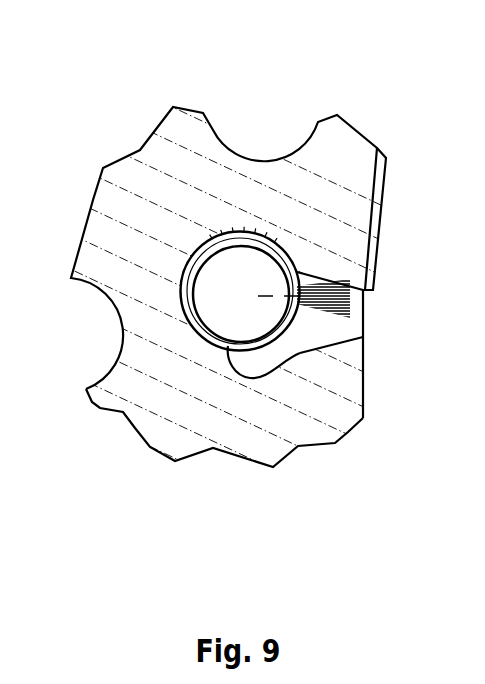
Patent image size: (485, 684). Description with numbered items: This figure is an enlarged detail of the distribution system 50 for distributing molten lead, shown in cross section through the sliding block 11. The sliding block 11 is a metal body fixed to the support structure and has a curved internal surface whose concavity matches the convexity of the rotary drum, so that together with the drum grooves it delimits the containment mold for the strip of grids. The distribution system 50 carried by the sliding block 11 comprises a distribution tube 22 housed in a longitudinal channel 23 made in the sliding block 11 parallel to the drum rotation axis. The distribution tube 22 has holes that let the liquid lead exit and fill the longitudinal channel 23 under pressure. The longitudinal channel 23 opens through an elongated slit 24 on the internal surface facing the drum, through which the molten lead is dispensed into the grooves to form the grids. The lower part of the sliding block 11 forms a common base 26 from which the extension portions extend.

The sliding block 11 is at (183, 139).
The distribution system 50 is at (296, 208).
The distribution tube 22 is at (216, 231).
The longitudinal channel 23 is at (264, 357).
The elongated slit 24 is at (364, 314).
The common base 26 is at (152, 398).